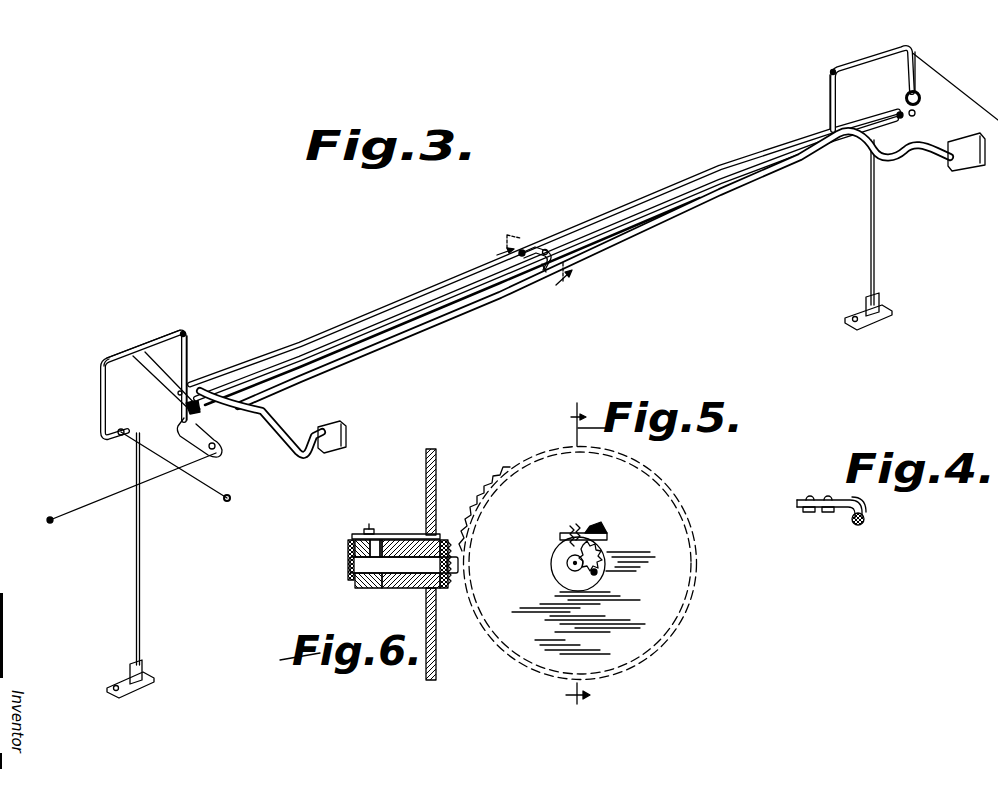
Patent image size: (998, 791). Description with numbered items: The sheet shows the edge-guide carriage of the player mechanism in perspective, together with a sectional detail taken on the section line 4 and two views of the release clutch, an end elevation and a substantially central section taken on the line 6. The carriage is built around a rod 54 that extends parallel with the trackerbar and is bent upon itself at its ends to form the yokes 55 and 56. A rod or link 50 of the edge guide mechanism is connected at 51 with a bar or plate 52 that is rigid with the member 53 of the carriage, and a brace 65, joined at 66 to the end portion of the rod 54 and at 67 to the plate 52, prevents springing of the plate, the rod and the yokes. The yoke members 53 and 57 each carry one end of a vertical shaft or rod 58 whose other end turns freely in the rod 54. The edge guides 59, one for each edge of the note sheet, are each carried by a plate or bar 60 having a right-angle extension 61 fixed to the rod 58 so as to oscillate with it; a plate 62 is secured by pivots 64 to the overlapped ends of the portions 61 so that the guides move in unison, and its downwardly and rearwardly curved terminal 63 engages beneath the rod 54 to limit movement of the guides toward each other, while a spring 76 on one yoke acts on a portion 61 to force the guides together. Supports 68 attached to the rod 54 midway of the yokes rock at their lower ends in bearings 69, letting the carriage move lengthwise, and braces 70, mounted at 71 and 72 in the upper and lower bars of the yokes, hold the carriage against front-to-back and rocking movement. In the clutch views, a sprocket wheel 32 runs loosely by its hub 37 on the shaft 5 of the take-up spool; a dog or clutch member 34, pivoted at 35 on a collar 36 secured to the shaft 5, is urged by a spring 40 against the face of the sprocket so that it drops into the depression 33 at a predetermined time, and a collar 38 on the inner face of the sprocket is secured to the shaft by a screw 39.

In FIG. 3, the section line 4— 4 is at (525, 267).
In FIG. 5, the shaft of the take-up spool 5 is at (573, 566).
In FIG. 6, the shaft of the take-up spool 5 is at (362, 566).
In FIG. 5, the section line 6- 6 is at (578, 556).
In FIG. 5, the sprocket wheel 32 is at (690, 580).
In FIG. 6, the sprocket wheel 32 is at (437, 461).
In FIG. 5, the depression 33 is at (607, 533).
In FIG. 6, the depression 33 is at (440, 533).
In FIG. 5, the pivoted dog or clutch member 34 is at (590, 529).
In FIG. 6, the pivoted dog or clutch member 34 is at (392, 534).
In FIG. 5, the pivot 35 is at (572, 530).
In FIG. 6, the pivot 35 is at (366, 528).
In FIG. 5, the collar 36 is at (556, 568).
In FIG. 6, the collar 36 is at (368, 589).
In FIG. 6, the hub of the sprocket wheel 37 is at (418, 589).
In FIG. 6, the collar 38 is at (446, 589).
In FIG. 5, the screw 39 is at (484, 509).
In FIG. 6, the screw 39 is at (449, 541).
In FIG. 5, the spring 40 is at (601, 553).
In FIG. 6, the spring 40 is at (349, 556).
In FIG. 3, the rod or link 50 is at (99, 501).
In FIG. 3, the connection 51 is at (224, 451).
In FIG. 3, the bar or plate 52 is at (160, 370).
In FIG. 3, the carriage member 53 is at (162, 338).
In FIG. 3, the rod 54 is at (393, 322).
In FIG. 4, the rod 54 is at (867, 518).
In FIG. 3, the yoke 55 is at (100, 399).
In FIG. 3, the yoke 56 is at (908, 72).
In FIG. 3, the yoke member 57 is at (876, 57).
In FIG. 3, the vertical shaft or rod 58 is at (186, 338).
In FIG. 3, the edge guides 59 is at (344, 436).
In FIG. 3, the plate or bar 60 is at (860, 150).
In FIG. 3, the right angle extension 61 is at (317, 338).
In FIG. 4, the right angle extension 61 is at (804, 509).
In FIG. 3, the plate 62 is at (586, 258).
In FIG. 4, the plate 62 is at (826, 509).
In FIG. 3, the curved terminal 63 is at (544, 272).
In FIG. 4, the curved terminal 63 is at (866, 523).
In FIG. 3, the pivots 64 is at (546, 250).
In FIG. 4, the pivots 64 is at (828, 497).
In FIG. 3, the brace 65 is at (422, 328).
In FIG. 3, the brace connection 66 is at (900, 119).
In FIG. 3, the brace connection 67 is at (183, 389).
In FIG. 3, the supports 68 is at (141, 552).
In FIG. 3, the base bracket 69 is at (137, 683).
In FIG. 3, the braces 70 is at (196, 480).
In FIG. 3, the brace mounting 71 is at (111, 358).
In FIG. 3, the brace mounting 72 is at (121, 437).
In FIG. 3, the spring 76 is at (866, 126).